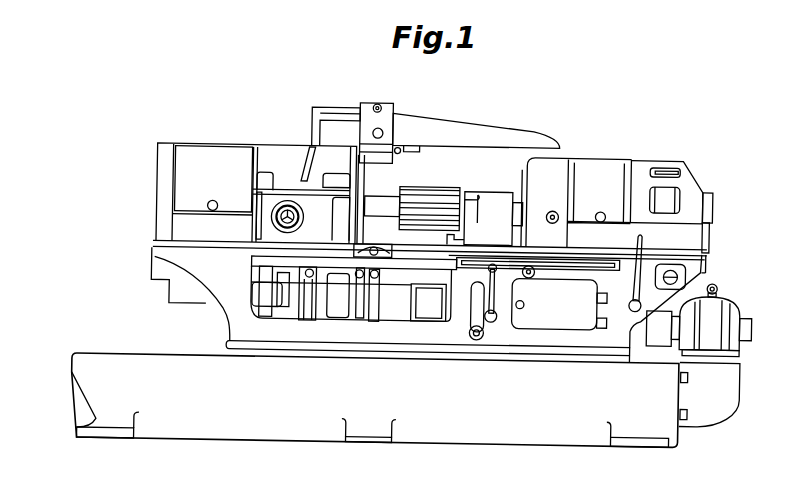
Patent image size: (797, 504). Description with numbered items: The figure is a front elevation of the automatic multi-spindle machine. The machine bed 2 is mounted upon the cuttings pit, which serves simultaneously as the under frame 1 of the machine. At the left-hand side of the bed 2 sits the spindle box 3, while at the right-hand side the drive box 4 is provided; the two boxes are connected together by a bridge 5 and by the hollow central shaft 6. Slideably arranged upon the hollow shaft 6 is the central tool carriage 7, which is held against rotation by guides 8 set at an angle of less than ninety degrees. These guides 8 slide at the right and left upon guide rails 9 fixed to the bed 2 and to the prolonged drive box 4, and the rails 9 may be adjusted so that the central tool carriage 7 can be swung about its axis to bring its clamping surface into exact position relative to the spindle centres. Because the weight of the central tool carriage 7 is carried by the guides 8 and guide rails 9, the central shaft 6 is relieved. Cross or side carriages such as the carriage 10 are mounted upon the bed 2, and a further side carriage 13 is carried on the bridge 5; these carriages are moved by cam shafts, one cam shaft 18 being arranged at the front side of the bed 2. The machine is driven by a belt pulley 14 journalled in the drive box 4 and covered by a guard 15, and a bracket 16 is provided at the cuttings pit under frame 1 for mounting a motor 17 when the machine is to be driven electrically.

The under frame 1 is at (287, 424).
The machine bed 2 is at (226, 290).
The spindle box 3 is at (269, 201).
The drive box 4 is at (554, 171).
The bridge 5 is at (439, 127).
The hollow central shaft 6 is at (377, 203).
The central tool carriage 7 is at (422, 194).
The guides 8 is at (485, 206).
The guide rails 9 is at (451, 239).
The cross or side carriage 10 is at (385, 247).
The cross or side carriage 13 is at (386, 119).
The belt pulley 14 is at (658, 188).
The guard 15 is at (718, 201).
The bracket 16 is at (718, 389).
The motor 17 is at (732, 300).
The cam shaft 18 is at (300, 293).